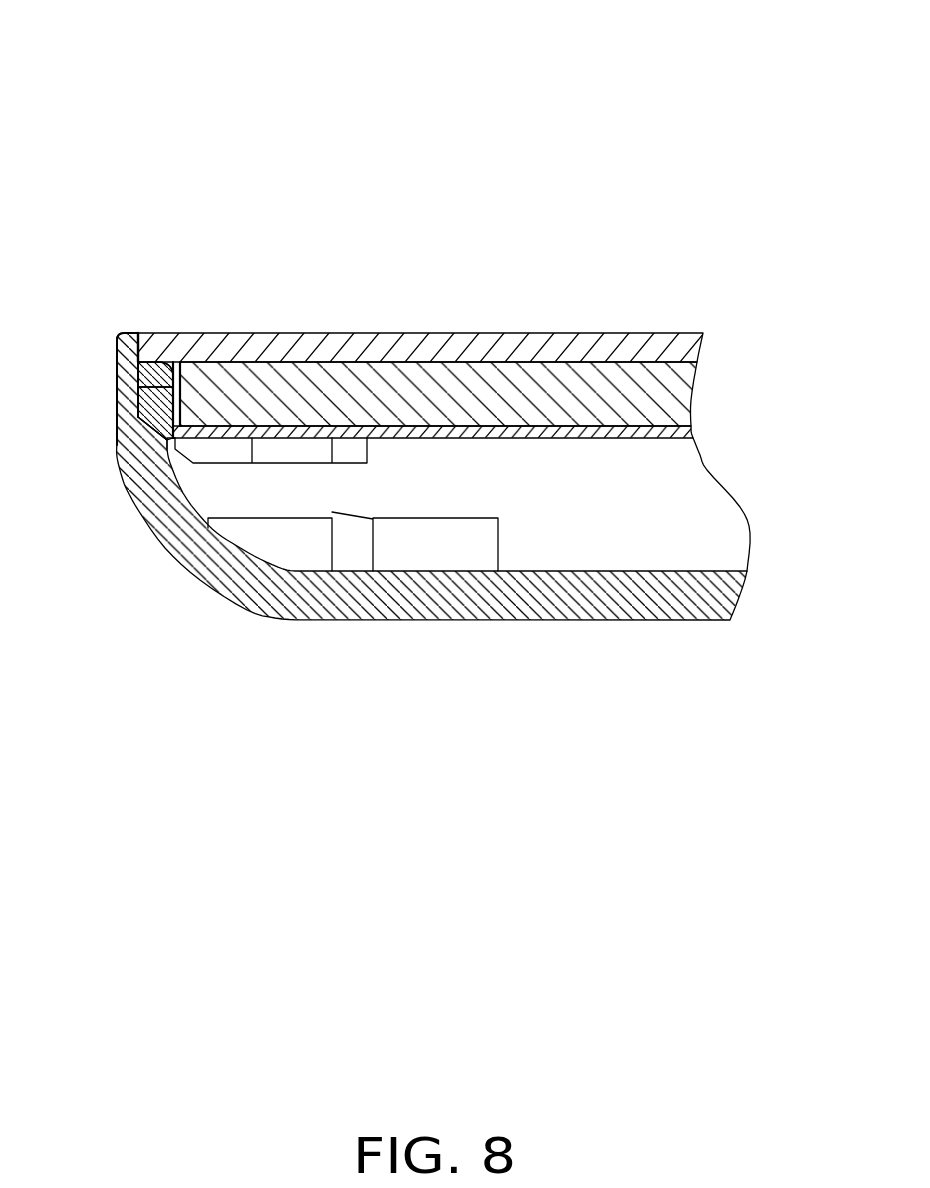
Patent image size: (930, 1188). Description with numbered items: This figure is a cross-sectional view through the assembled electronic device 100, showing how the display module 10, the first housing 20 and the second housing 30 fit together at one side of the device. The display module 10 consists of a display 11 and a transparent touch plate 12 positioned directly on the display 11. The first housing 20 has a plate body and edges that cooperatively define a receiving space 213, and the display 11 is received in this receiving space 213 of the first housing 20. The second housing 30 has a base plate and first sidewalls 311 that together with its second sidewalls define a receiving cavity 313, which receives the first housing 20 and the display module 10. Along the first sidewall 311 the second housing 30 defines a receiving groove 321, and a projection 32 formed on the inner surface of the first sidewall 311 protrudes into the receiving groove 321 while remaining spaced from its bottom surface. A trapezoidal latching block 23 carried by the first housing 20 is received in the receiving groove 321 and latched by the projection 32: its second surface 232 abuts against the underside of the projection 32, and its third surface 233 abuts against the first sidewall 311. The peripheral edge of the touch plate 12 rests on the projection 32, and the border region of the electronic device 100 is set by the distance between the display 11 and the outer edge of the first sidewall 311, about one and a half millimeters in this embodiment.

The electronic device 100 is at (432, 46).
The display module 10 is at (480, 379).
The display 11 is at (475, 394).
The touch plate 12 is at (695, 343).
The first housing 20 is at (470, 374).
The receiving space 213 is at (188, 365).
The latching block 23 is at (100, 360).
The second surface 232 is at (165, 380).
The third surface 233 is at (137, 388).
The second housing 30 is at (702, 598).
The projection 32 is at (116, 368).
The first sidewall 311 is at (114, 370).
The receiving cavity 313 is at (723, 528).
The receiving groove 321 is at (152, 425).